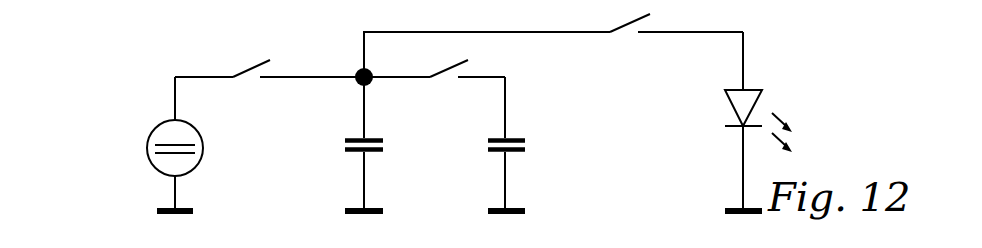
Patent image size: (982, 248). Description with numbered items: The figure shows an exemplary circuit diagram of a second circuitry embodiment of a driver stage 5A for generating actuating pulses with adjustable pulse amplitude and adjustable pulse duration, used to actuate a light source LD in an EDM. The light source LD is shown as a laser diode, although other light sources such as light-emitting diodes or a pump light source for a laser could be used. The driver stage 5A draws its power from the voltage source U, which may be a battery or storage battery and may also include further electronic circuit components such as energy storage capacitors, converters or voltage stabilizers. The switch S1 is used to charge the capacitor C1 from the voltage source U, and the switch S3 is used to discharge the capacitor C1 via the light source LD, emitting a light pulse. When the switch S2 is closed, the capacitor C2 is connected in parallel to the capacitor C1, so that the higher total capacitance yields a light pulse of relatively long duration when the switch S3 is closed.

The driver stage 5A is at (152, 42).
The voltage source U is at (157, 144).
The switch S1 is at (269, 59).
The switch S2 is at (434, 60).
The switch S3 is at (553, 39).
The capacitor C1 is at (379, 144).
The capacitor C2 is at (522, 144).
The light source LD is at (731, 121).